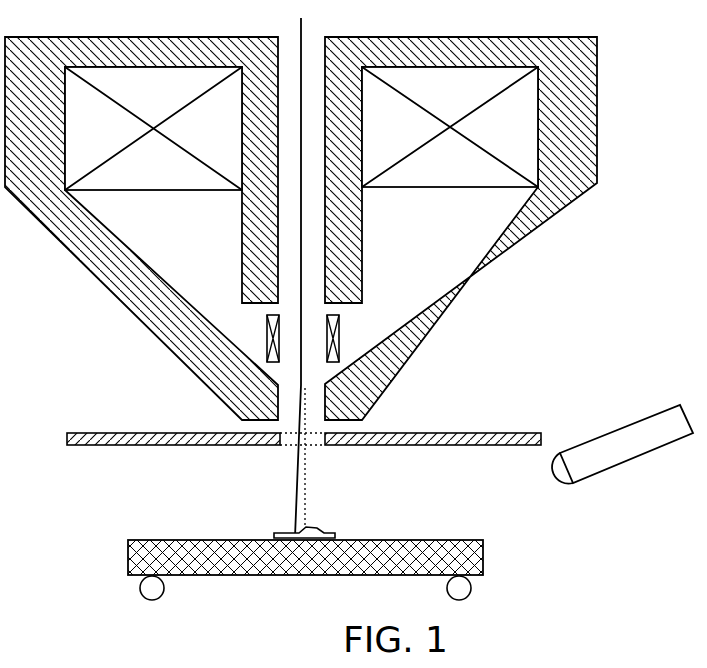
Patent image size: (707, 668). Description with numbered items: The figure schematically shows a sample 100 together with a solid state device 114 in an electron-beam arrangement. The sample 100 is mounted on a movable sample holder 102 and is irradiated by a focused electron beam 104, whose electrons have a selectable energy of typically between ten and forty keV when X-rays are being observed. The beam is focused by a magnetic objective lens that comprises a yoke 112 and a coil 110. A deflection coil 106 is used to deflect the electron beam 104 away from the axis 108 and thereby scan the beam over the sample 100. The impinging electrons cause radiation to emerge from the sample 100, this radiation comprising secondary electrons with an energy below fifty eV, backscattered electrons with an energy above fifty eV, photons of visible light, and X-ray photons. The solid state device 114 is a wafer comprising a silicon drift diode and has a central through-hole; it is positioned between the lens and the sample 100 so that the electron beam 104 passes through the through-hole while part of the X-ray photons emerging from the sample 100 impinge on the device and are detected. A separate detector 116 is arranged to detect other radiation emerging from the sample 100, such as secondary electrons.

The sample 100 is at (323, 528).
The movable sample holder 102 is at (413, 548).
The focused electron beam 104 is at (298, 453).
The deflection coil 106 is at (267, 323).
The axis 108 is at (305, 502).
The coil 110 is at (490, 135).
The yoke 112 is at (446, 315).
The solid state device 114 is at (182, 433).
The detector 116 is at (580, 462).